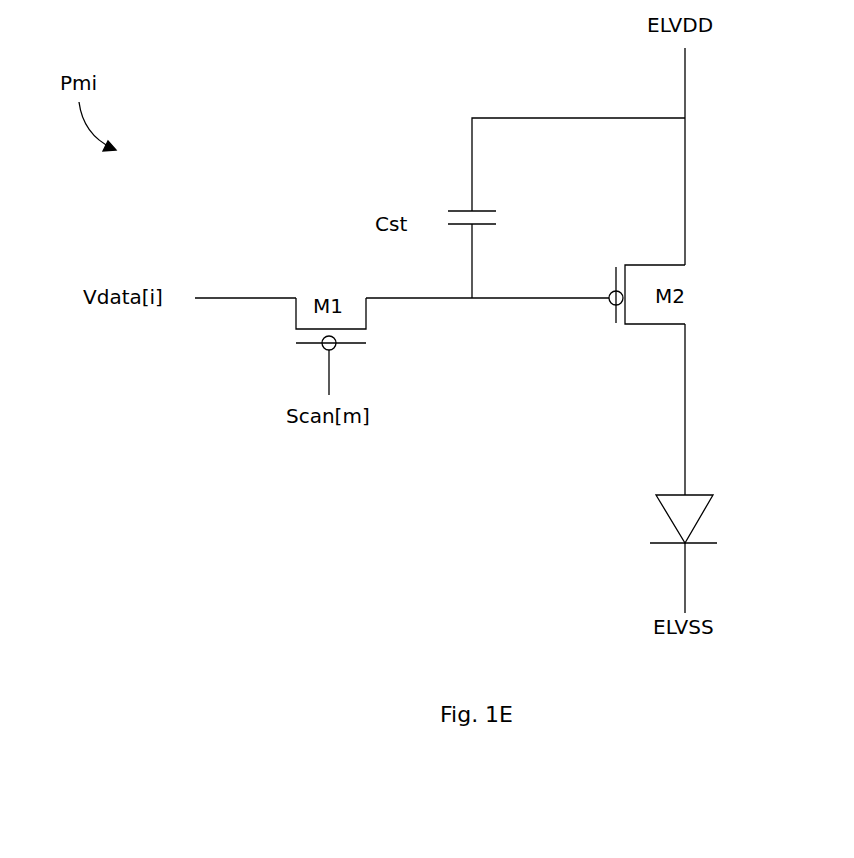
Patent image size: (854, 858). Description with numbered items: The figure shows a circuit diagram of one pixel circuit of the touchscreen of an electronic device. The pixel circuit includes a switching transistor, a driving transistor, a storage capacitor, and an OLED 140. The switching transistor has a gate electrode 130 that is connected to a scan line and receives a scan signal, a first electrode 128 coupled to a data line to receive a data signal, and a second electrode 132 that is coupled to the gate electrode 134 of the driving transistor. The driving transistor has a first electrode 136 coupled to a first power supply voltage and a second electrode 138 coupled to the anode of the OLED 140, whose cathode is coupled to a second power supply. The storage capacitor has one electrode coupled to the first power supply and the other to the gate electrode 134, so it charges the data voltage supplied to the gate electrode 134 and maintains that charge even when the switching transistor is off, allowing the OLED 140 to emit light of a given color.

The first electrode 128 is at (296, 298).
The gate electrode 130 is at (329, 352).
The second electrode 132 is at (366, 298).
The gate electrode 134 is at (615, 291).
The first electrode 136 is at (685, 263).
The second electrode 138 is at (685, 326).
The OLED 140 is at (671, 519).